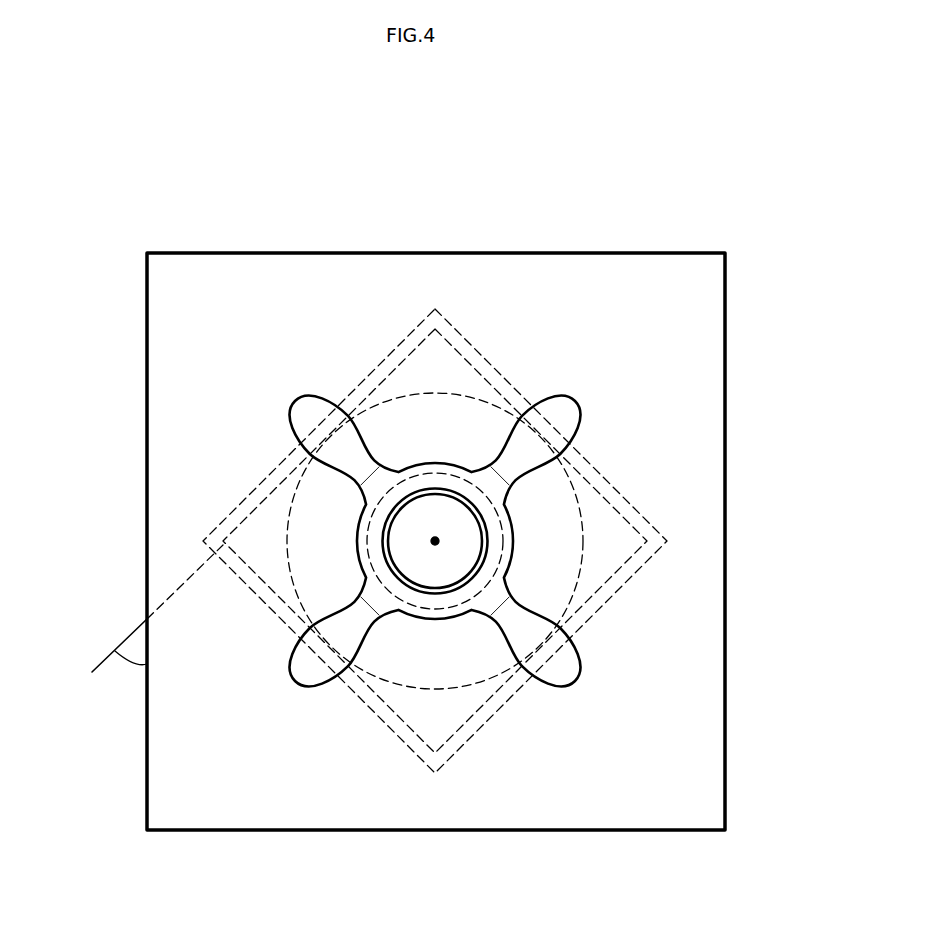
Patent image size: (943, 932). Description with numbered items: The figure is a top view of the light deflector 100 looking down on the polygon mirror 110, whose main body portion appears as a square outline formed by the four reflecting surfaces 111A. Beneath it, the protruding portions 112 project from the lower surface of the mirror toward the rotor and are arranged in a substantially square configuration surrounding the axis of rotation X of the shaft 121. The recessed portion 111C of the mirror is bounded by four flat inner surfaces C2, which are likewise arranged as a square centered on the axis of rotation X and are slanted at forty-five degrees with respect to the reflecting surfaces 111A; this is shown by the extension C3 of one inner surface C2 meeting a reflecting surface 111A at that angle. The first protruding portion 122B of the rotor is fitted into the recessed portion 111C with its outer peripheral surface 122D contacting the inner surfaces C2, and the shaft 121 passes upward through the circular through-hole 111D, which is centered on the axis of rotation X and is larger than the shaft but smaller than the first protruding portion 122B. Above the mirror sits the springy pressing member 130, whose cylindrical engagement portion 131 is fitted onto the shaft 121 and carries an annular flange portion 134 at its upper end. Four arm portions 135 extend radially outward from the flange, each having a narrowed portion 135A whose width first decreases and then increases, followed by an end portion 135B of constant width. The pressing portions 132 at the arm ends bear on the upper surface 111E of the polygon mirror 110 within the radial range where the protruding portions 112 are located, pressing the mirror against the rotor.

The rotary body / rotation structure 100 is at (550, 180).
The polygon mirror 110 is at (728, 305).
The reflecting surfaces 111A is at (248, 253).
The recessed portion 111C is at (258, 523).
The through-hole 111D is at (510, 580).
The upper surface 111E is at (565, 253).
The protruding portions 112 is at (390, 364).
The shaft 121 is at (417, 547).
The first protruding portion 122B is at (432, 690).
The outer peripheral surface 122D is at (410, 688).
The pressing member 130 is at (578, 395).
The engagement portion 131 is at (430, 498).
The pressing portions 132 is at (292, 419).
The annular flange portion 134 is at (512, 518).
The arm portions 135 is at (579, 676).
The narrowed portion 135A is at (490, 632).
The end portion 135B is at (520, 672).
The inner surfaces C2 is at (428, 322).
The extension C3 is at (122, 640).
The axis of rotation X is at (435, 541).